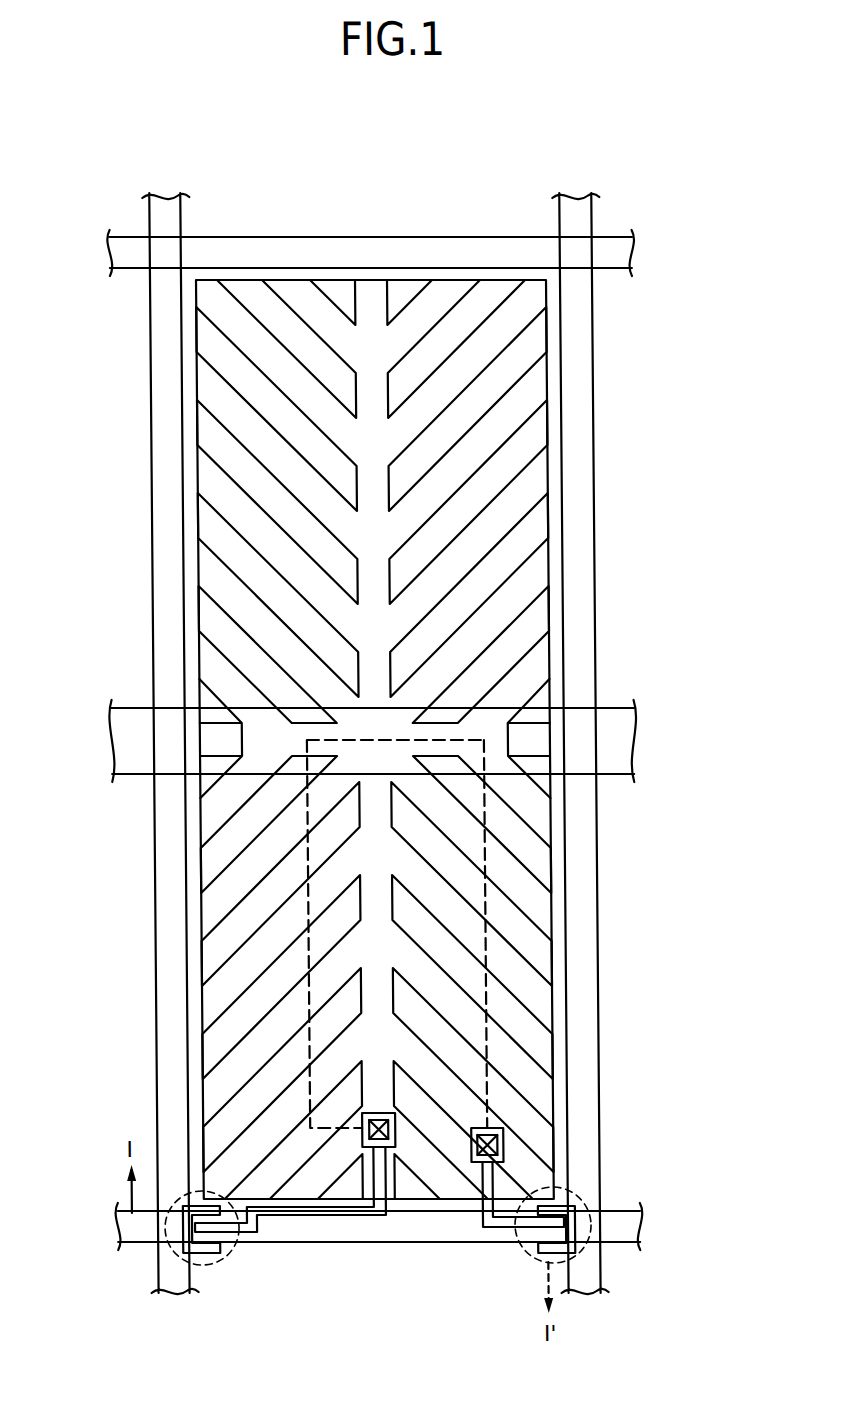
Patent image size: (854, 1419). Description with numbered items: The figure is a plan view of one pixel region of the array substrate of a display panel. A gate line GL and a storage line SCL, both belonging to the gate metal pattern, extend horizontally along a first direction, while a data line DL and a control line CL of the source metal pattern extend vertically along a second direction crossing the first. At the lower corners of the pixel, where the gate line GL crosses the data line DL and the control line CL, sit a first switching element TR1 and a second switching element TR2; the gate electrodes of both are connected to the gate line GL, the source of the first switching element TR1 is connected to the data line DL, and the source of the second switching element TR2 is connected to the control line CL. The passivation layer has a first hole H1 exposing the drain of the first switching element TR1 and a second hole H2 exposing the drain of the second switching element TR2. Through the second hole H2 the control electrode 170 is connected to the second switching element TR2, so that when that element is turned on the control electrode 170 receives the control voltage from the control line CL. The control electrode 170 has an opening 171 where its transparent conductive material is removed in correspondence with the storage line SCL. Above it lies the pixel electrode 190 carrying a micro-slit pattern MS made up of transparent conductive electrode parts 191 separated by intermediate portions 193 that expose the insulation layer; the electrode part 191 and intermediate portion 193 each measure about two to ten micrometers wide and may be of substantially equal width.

The control electrode 170 is at (542, 612).
The opening 171 is at (509, 747).
The pixel electrode 190 is at (207, 476).
The electrode part 191 is at (542, 473).
The intermediate portion 193 is at (542, 522).
The micro-slit pattern MS is at (557, 548).
The storage line SCL is at (629, 735).
The gate line GL is at (634, 1222).
The data line DL is at (163, 1283).
The control line CL is at (576, 1277).
The first switching element TR1 is at (191, 1264).
The second switching element TR2 is at (520, 1253).
The first hole H1 is at (354, 1133).
The second hole H2 is at (464, 1147).